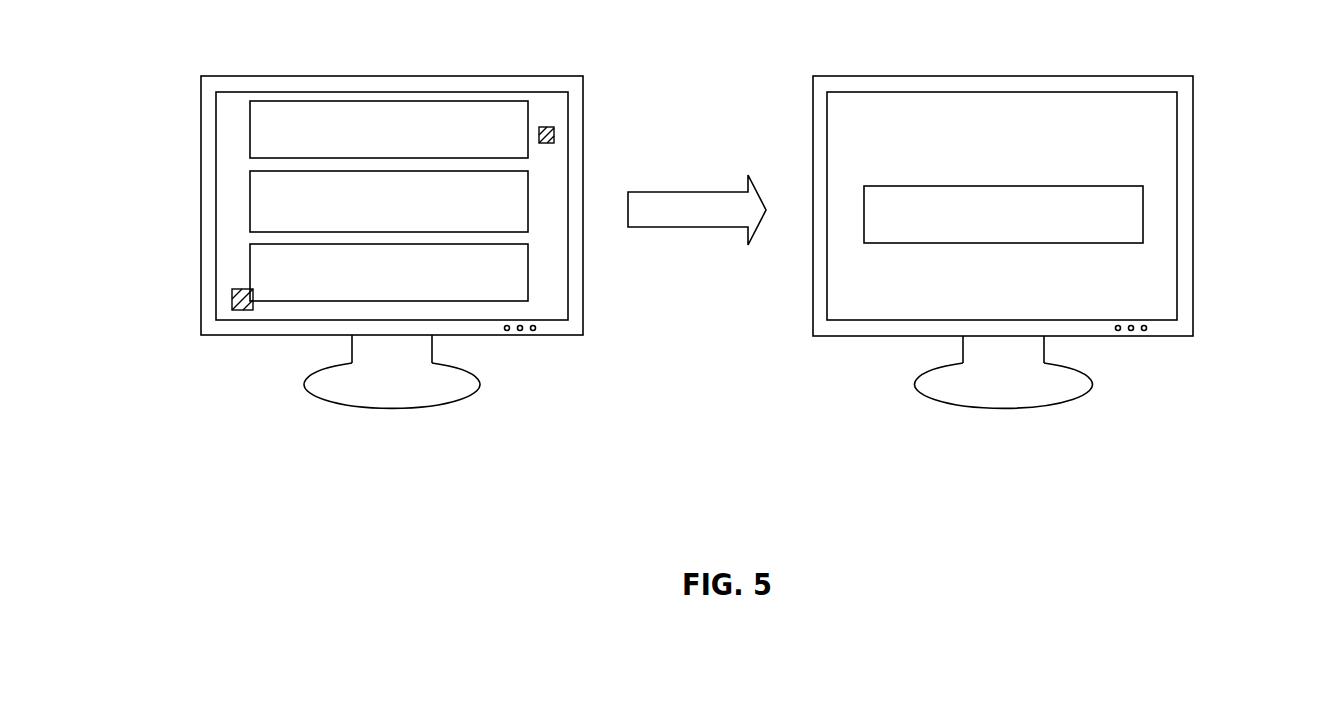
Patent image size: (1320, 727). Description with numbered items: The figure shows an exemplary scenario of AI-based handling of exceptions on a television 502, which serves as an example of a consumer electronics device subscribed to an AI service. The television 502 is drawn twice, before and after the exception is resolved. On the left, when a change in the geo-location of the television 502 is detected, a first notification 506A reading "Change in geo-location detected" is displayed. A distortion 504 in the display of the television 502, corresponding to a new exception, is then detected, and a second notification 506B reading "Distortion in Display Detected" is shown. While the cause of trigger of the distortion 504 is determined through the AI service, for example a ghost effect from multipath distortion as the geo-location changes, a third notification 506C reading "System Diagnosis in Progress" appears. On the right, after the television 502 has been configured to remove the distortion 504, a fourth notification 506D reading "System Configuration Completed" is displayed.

The television 502 is at (258, 337).
The distortion 504 is at (547, 128).
The first notification 506A is at (250, 133).
The second notification 506B is at (250, 205).
The third notification 506C is at (250, 262).
The fourth notification 506D is at (1143, 218).